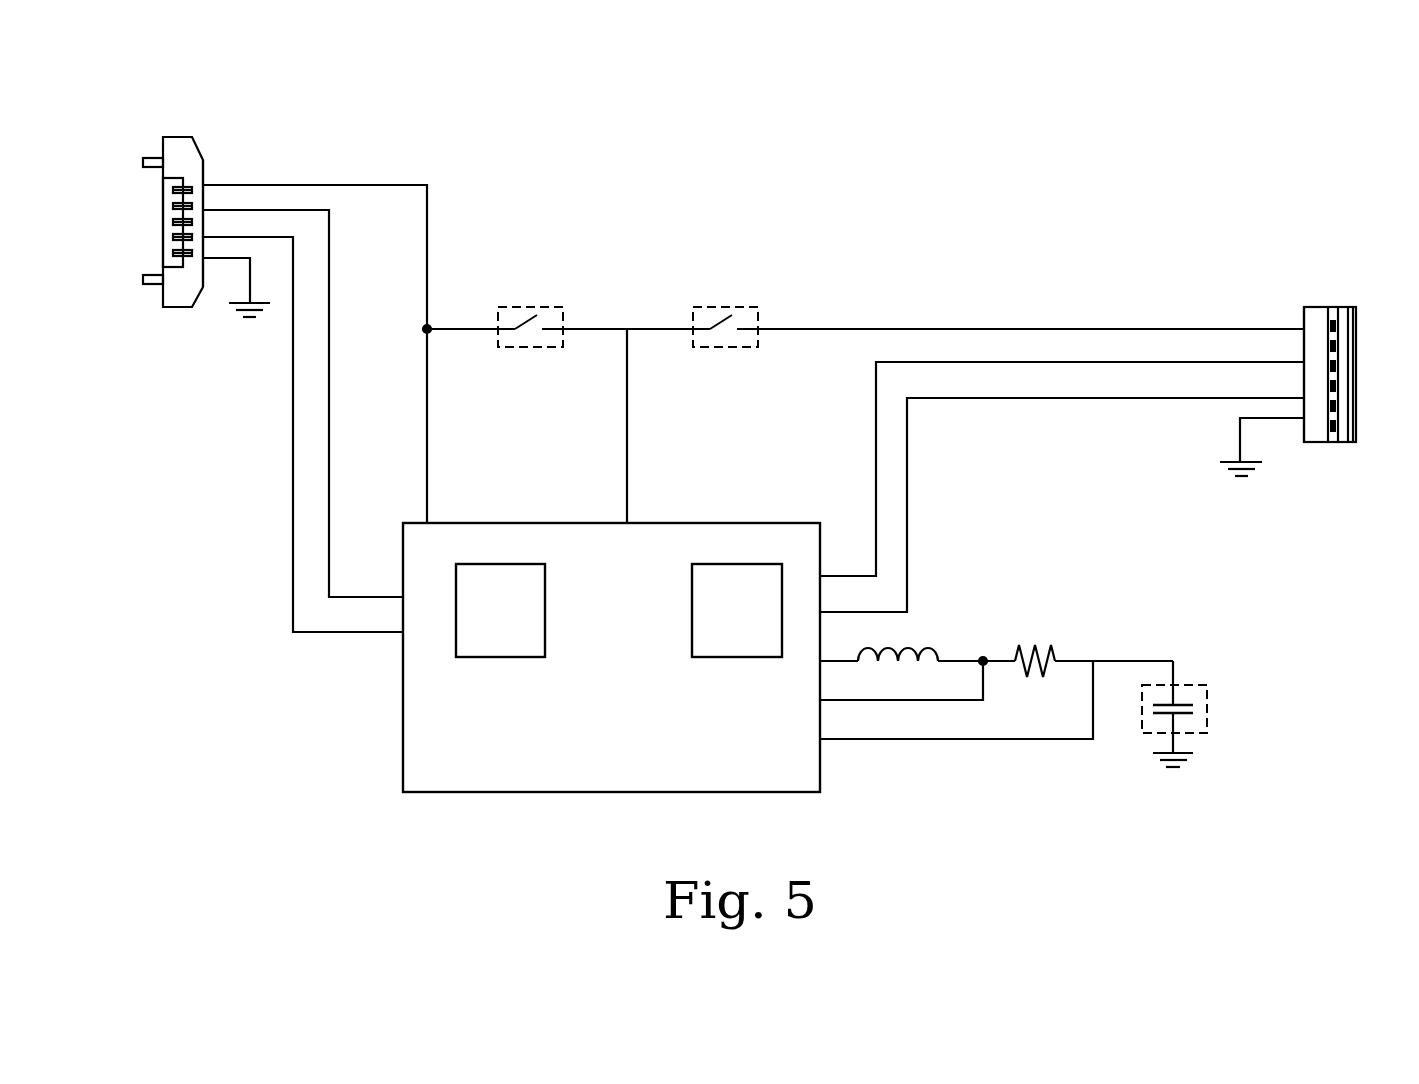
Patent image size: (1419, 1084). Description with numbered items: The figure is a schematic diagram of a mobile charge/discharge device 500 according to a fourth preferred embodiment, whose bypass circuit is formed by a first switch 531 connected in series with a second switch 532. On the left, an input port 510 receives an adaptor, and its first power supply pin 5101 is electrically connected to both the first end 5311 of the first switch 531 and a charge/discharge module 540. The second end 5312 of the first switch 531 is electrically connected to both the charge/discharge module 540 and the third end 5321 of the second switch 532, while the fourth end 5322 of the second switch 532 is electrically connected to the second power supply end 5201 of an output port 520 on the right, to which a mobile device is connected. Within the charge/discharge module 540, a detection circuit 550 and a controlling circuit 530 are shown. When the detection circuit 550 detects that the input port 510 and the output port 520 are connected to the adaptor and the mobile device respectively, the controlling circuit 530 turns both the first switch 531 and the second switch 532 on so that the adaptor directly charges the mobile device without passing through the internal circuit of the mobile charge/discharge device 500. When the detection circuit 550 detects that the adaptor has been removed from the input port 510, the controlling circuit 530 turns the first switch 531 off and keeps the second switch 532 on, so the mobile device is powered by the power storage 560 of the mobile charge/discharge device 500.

The mobile charge/discharge device 500 is at (153, 102).
The input port 510 is at (175, 308).
The first power supply pin 5101 is at (204, 182).
The output port 520 is at (1343, 307).
The second power supply end 5201 is at (1304, 325).
The controlling circuit 530 is at (495, 657).
The first switch 531 is at (522, 307).
The first end 5311 is at (498, 330).
The second end 5312 is at (567, 329).
The second switch 532 is at (717, 307).
The third end 5321 is at (693, 330).
The fourth end 5322 is at (760, 329).
The charge/discharge module 540 is at (480, 792).
The detection circuit 550 is at (739, 657).
The power storage 560 is at (1207, 707).